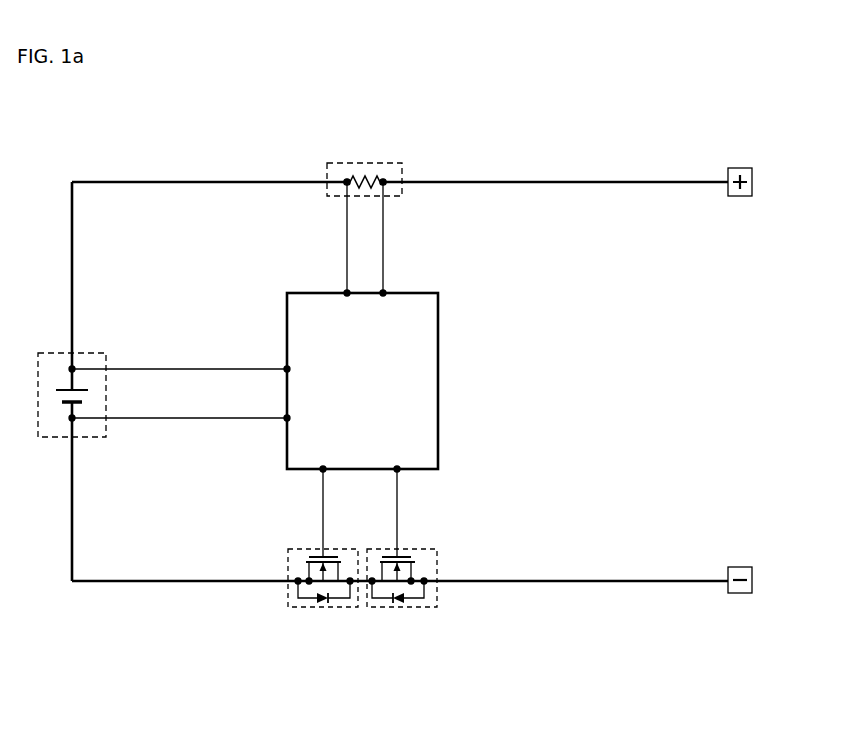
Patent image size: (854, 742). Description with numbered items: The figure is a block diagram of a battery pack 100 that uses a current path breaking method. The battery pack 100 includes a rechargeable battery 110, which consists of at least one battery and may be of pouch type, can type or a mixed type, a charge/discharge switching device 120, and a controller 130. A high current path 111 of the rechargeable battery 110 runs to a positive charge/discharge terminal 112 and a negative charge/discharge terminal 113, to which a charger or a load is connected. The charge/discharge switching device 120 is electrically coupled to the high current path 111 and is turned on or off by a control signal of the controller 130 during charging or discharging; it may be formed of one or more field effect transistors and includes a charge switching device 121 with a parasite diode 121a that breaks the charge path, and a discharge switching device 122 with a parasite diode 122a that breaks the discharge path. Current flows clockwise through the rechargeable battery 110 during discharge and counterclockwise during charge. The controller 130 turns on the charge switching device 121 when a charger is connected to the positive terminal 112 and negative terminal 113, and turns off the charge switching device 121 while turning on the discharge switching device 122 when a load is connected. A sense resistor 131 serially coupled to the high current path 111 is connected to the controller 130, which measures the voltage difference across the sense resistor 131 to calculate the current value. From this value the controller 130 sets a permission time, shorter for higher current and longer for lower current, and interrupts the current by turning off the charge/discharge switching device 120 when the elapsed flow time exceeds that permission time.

The battery pack 100 is at (537, 145).
The rechargeable battery 110 is at (88, 437).
The high current path 111 is at (553, 182).
The positive charge/discharge terminal 112 is at (740, 196).
The negative charge/discharge terminal 113 is at (740, 567).
The charge/discharge switching device 120 is at (364, 621).
The charge switching device 121 is at (422, 603).
The parasite diode 121a is at (410, 600).
The discharge switching device 122 is at (305, 603).
The parasite diode 122a is at (328, 642).
The controller 130 is at (446, 381).
The sense resistor 131 is at (402, 192).